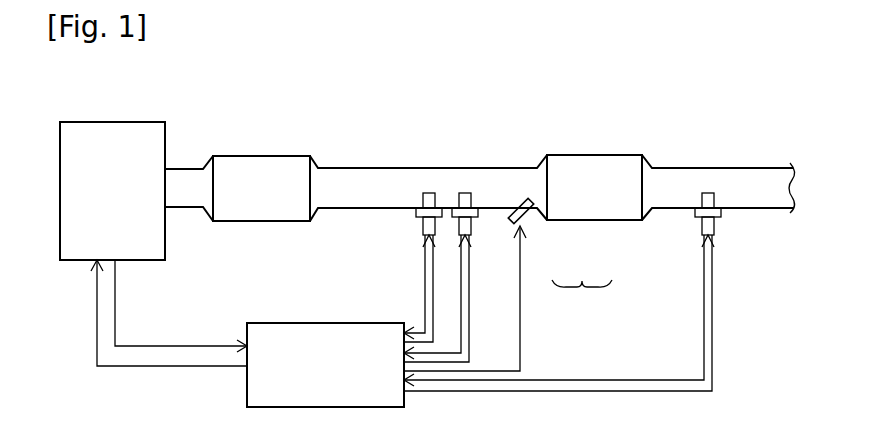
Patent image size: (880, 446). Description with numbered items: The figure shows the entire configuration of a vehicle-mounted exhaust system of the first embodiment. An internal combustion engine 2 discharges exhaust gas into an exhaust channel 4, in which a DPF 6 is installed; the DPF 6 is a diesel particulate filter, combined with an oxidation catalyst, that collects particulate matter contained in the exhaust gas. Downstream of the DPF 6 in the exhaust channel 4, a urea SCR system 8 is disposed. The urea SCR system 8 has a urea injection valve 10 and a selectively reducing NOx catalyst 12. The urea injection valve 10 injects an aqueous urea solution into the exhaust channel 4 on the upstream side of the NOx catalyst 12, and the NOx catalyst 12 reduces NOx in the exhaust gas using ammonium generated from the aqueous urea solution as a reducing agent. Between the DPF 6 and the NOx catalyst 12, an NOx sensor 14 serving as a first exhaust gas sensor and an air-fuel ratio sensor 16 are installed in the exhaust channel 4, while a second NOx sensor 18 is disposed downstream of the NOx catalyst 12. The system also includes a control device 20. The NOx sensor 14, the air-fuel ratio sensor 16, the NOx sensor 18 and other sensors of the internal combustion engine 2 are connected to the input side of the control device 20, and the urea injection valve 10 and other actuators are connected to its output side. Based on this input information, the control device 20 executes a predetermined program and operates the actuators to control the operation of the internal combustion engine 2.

The internal combustion engine 2 is at (105, 148).
The exhaust channel 4 is at (190, 178).
The DPF 6 is at (252, 170).
The urea SCR system 8 is at (591, 321).
The urea injection valve 10 is at (525, 224).
The selectively reducing NOx catalyst 12 is at (603, 220).
The NOx sensor 14 is at (424, 228).
The air-fuel ratio sensor 16 is at (473, 226).
The NOx sensor 18 is at (722, 213).
The control device 20 is at (328, 322).